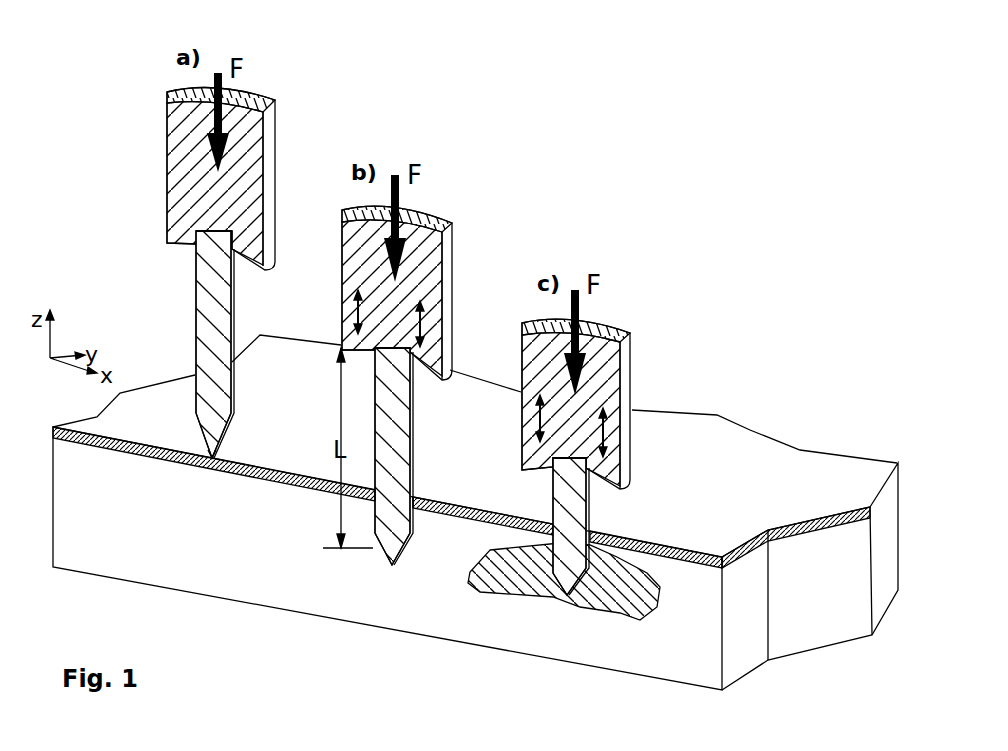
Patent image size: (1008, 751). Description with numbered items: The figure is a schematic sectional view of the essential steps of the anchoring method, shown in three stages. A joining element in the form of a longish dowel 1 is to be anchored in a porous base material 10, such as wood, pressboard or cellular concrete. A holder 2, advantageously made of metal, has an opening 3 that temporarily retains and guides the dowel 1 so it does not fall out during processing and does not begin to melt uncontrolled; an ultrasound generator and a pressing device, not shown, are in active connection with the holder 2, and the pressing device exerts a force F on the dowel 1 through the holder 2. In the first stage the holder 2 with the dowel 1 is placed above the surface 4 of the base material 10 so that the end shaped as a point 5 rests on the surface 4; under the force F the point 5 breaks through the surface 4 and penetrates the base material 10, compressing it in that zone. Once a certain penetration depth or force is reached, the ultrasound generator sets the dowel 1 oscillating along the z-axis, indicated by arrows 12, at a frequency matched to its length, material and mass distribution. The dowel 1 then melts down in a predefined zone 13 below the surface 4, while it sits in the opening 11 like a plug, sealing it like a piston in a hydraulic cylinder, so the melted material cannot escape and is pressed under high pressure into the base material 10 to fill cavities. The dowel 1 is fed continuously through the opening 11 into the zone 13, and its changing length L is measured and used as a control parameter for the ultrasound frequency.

The dowel 1 is at (193, 328).
The holder 2 is at (266, 152).
The opening 3 is at (236, 248).
The surface 4 is at (727, 443).
The point 5 is at (220, 460).
The base material 10 is at (185, 570).
The opening 11 is at (420, 497).
The arrows 12 is at (355, 325).
The zone 13 is at (422, 543).